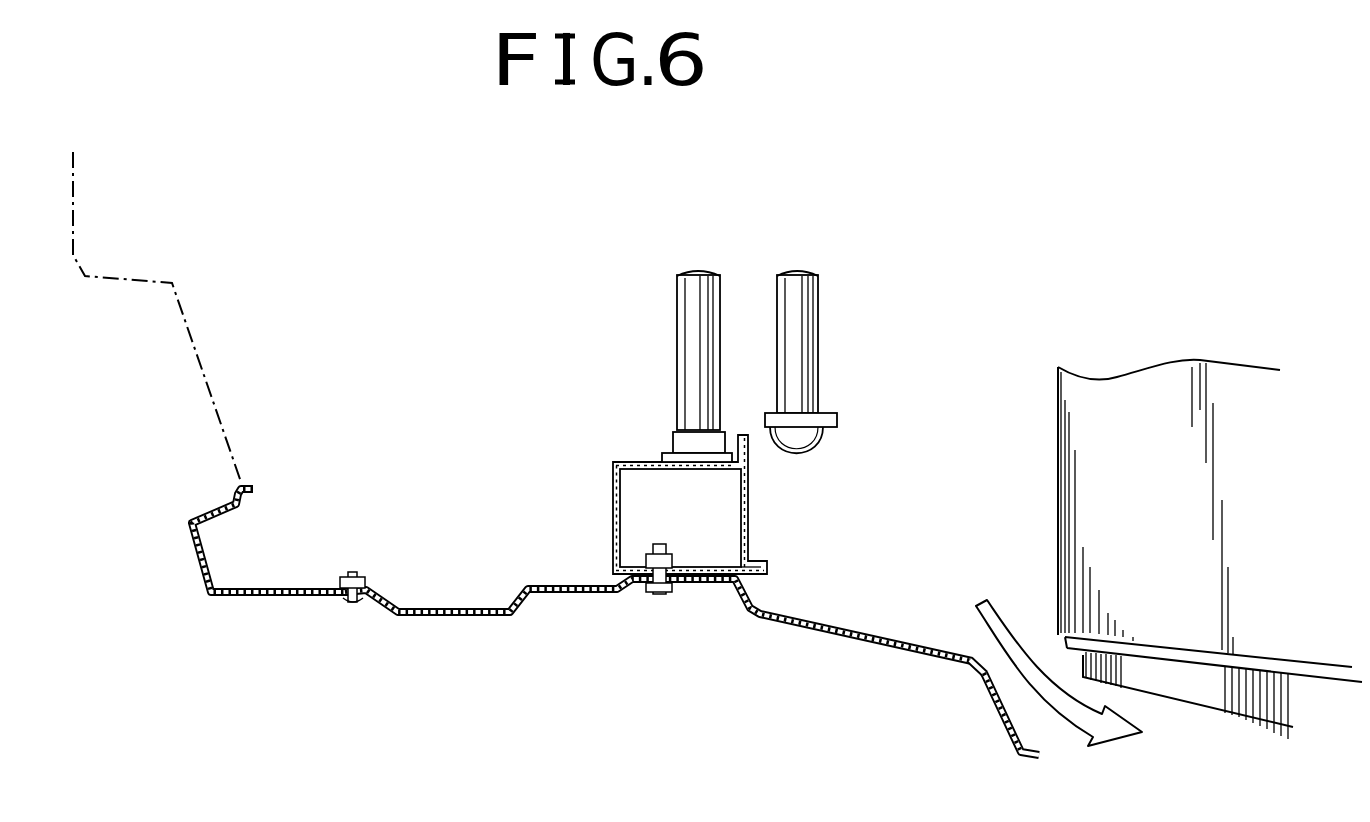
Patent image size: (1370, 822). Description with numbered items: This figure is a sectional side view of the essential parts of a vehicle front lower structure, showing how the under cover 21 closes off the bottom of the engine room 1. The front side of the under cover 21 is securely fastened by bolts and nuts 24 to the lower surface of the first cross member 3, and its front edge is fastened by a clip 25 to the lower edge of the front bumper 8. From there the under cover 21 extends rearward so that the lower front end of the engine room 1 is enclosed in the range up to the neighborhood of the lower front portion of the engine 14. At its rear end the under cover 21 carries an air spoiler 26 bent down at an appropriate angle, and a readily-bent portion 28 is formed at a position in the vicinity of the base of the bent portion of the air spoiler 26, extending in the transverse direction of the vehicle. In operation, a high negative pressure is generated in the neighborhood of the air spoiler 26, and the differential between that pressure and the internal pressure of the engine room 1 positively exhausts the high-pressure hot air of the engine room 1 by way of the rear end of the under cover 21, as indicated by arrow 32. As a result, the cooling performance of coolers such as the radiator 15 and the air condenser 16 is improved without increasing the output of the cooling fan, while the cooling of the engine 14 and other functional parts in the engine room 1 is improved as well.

The engine room 1 is at (993, 206).
The first cross member 3 is at (613, 512).
The front bumper 8 is at (198, 562).
The engine 14 is at (1130, 400).
The radiator 15 is at (687, 305).
The air condenser 16 is at (802, 307).
The under cover 21 is at (450, 618).
The bolts and nuts 24 is at (657, 594).
The clip 25 is at (350, 600).
The air spoiler 26 is at (998, 712).
The readily-bent portion 28 is at (978, 659).
The arrow 32 is at (1059, 689).